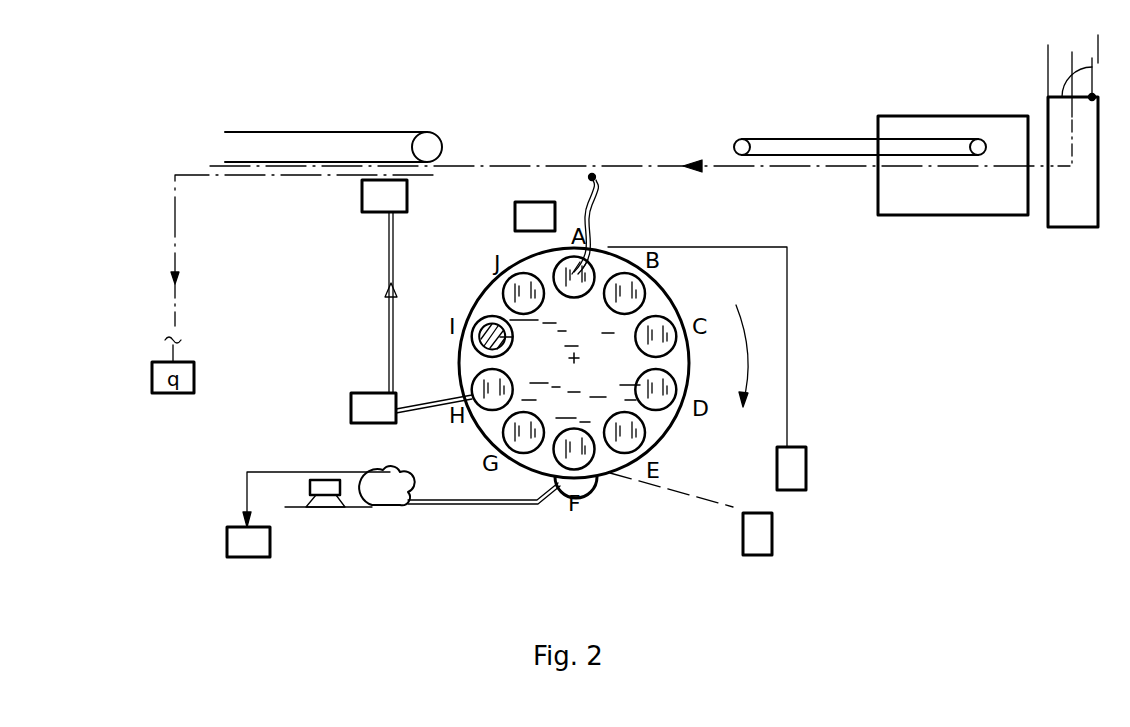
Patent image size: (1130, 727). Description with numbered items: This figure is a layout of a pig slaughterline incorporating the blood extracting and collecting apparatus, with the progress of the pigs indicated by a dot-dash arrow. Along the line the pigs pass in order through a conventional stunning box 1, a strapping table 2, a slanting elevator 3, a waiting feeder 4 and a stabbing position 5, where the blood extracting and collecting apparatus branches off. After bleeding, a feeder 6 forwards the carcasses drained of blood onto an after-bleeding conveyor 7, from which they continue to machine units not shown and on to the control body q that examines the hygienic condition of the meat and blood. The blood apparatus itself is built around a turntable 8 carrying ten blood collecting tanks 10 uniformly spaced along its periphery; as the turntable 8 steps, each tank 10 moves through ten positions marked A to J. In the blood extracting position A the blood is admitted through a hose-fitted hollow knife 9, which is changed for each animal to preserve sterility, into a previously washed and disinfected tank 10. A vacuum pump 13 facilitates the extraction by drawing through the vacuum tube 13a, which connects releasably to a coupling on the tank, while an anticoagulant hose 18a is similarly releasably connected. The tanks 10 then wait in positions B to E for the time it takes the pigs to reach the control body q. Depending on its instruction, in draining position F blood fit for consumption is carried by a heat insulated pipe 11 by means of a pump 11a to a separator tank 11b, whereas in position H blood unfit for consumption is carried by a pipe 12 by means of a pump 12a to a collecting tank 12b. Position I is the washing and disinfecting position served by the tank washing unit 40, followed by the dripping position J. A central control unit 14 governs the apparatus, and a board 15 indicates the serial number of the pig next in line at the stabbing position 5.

The stunning box 1 is at (1066, 197).
The strapping table 2 is at (903, 197).
The slanting elevator 3 is at (778, 148).
The waiting feeder 4 is at (713, 165).
The stabbing position 5 is at (528, 165).
The feeder 6 is at (450, 165).
The after-bleeding conveyor 7 is at (365, 153).
The turntable 8 is at (598, 457).
The hollow knife 9 is at (597, 178).
The blood collecting tanks 10 is at (630, 290).
The heat insulated pipe 11 is at (460, 500).
The pump 11a is at (333, 502).
The separator tank 11b is at (237, 542).
The pipe 12 is at (390, 338).
The pump 12a is at (362, 407).
The collecting tank 12b is at (377, 198).
The vacuum pump 13 is at (797, 465).
The vacuum tube 13a is at (788, 340).
The central control unit 14 is at (767, 533).
The board 15 is at (520, 217).
The hose 18a is at (583, 270).
The tank washing unit 40 is at (476, 346).